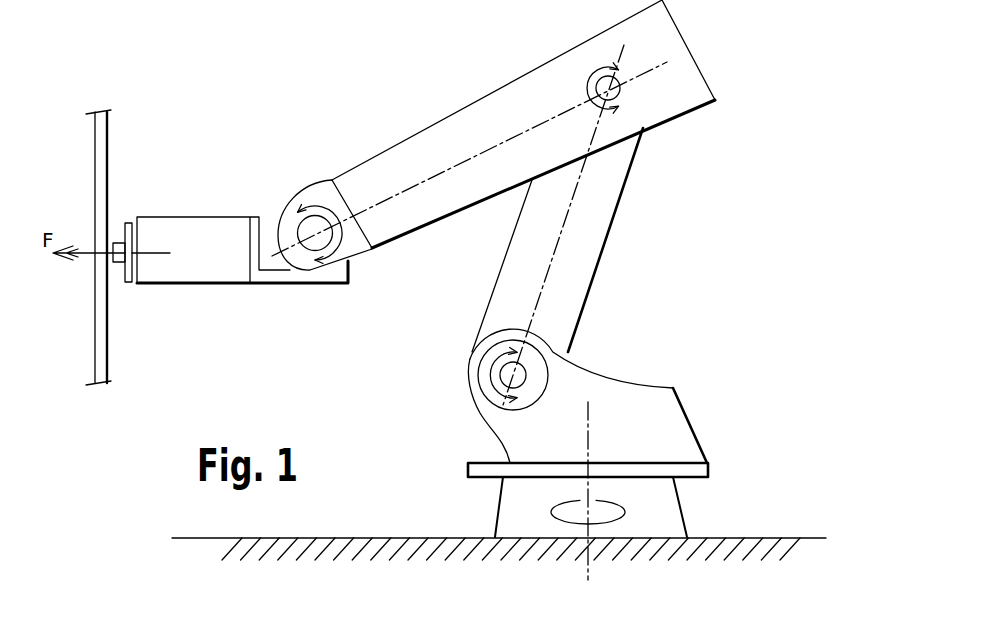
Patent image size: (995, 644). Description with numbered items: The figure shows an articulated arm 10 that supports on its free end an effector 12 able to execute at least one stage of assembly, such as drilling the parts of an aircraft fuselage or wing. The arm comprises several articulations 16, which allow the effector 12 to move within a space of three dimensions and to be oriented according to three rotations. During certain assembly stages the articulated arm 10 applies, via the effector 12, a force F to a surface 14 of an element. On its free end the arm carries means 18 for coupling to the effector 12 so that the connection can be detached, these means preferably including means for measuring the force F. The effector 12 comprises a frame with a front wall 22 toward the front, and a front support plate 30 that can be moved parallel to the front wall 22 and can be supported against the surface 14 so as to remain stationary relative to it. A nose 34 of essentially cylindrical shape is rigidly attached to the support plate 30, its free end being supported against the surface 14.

The articulated arm 10 is at (651, 215).
The effector 12 is at (213, 213).
The surface 14 is at (107, 202).
The articulation 16 is at (315, 232).
The means for coupling 18 is at (263, 286).
The front wall 22 is at (131, 284).
The front support plate 30 is at (122, 268).
The nose 34 is at (116, 266).